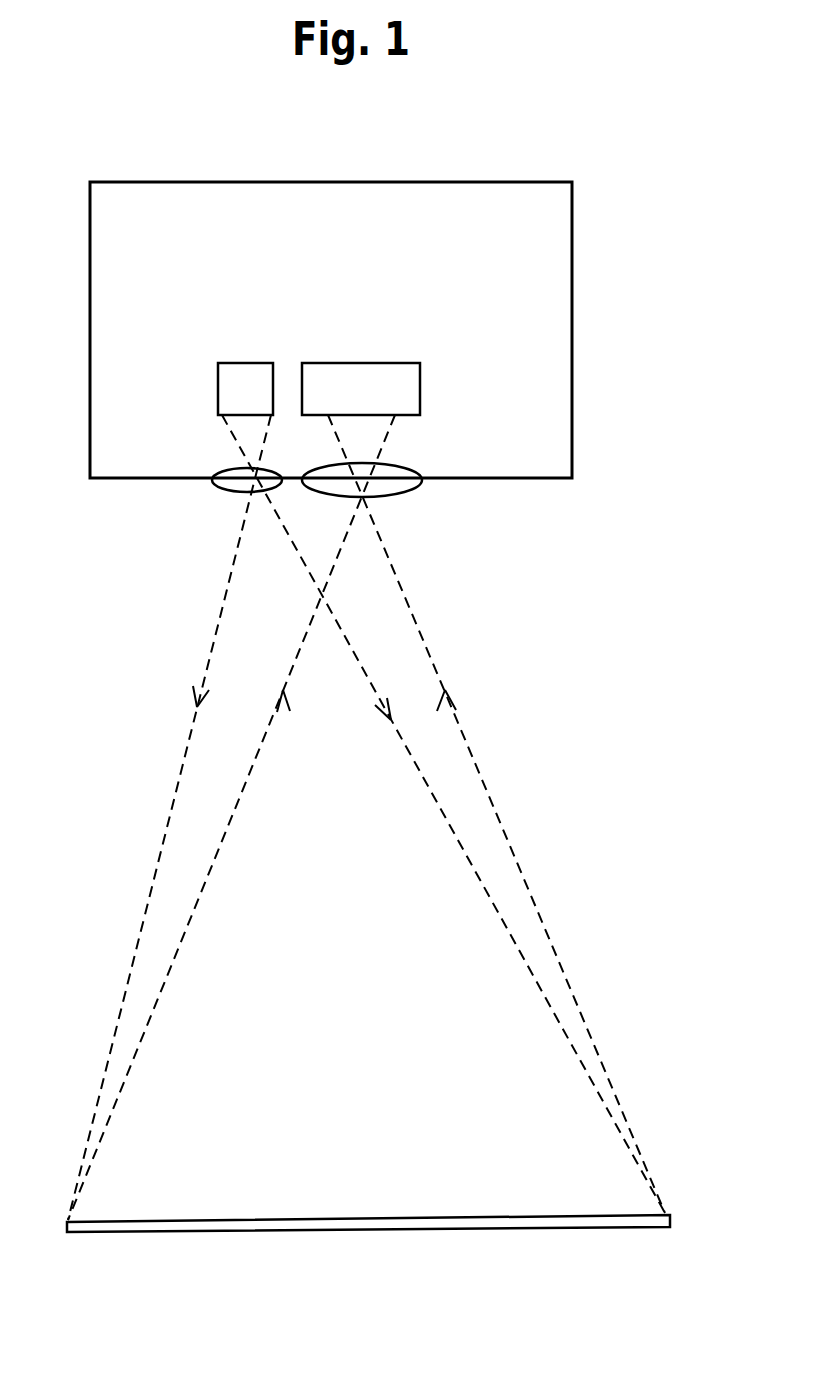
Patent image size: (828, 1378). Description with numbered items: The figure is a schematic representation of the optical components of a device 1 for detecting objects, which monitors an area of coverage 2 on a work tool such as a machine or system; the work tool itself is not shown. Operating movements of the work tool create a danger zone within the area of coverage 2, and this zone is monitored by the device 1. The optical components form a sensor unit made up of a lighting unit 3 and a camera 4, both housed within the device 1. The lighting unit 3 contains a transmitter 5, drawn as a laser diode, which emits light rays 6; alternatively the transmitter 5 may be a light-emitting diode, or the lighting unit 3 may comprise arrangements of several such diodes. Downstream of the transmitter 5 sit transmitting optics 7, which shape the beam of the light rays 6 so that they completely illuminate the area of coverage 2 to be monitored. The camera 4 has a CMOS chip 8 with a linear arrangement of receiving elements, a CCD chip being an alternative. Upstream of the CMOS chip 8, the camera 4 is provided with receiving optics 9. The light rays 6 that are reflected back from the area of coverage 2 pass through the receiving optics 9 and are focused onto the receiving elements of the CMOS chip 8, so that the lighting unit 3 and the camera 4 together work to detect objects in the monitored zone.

The device 1 is at (587, 293).
The area of coverage 2 is at (370, 1230).
The lighting unit 3 is at (207, 372).
The camera 4 is at (432, 380).
The transmitter 5 is at (237, 405).
The light rays 6 is at (155, 875).
The transmitting optics 7 is at (227, 487).
The CMOS chip 8 is at (341, 375).
The receiving optics 9 is at (363, 500).